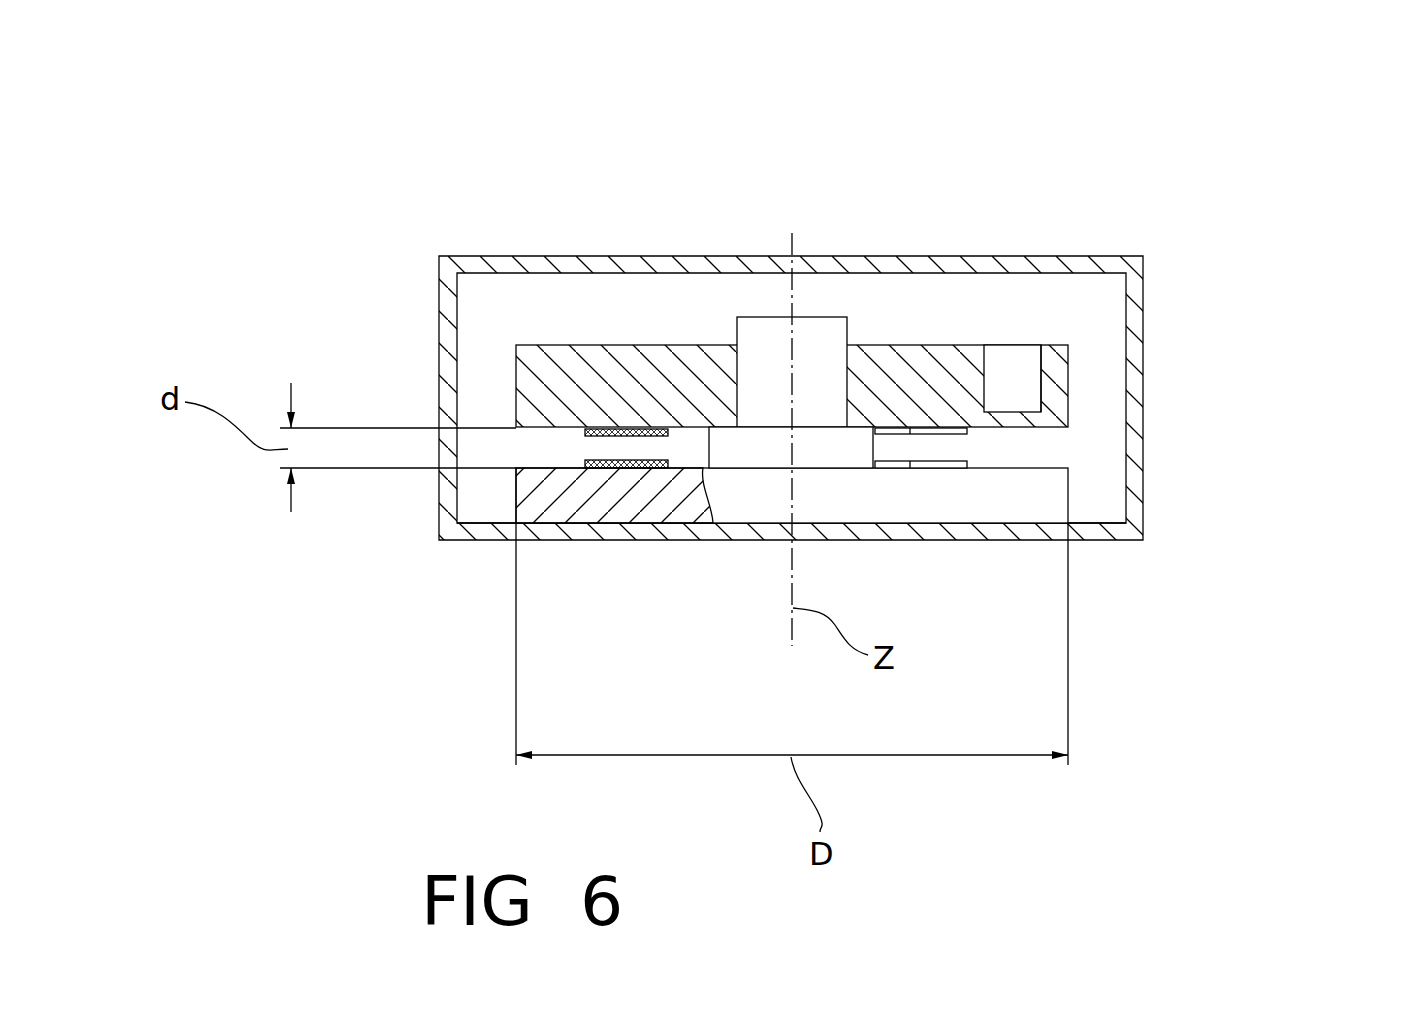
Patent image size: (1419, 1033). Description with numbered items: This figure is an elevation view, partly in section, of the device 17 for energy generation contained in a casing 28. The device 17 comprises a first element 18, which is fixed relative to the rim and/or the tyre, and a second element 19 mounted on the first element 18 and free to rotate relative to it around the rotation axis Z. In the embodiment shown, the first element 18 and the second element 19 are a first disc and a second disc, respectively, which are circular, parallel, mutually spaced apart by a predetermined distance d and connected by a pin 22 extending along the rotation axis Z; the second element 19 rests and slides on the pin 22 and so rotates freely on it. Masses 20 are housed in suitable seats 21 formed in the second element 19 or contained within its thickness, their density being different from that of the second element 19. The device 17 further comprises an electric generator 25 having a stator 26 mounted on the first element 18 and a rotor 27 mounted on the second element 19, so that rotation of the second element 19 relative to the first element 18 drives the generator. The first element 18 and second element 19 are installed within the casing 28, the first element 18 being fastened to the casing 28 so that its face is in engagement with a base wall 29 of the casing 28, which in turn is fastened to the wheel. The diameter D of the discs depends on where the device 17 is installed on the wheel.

The device for energy generation 17 is at (828, 389).
The first element 18 is at (1083, 489).
The second element 19 is at (946, 262).
The masses 20 is at (1008, 377).
The seats 21 is at (1040, 368).
The pin 22 is at (748, 450).
The electric generator 25 is at (541, 450).
The stator 26 is at (671, 452).
The rotor 27 is at (583, 438).
The casing 28 is at (509, 256).
The base wall 29 is at (1102, 540).